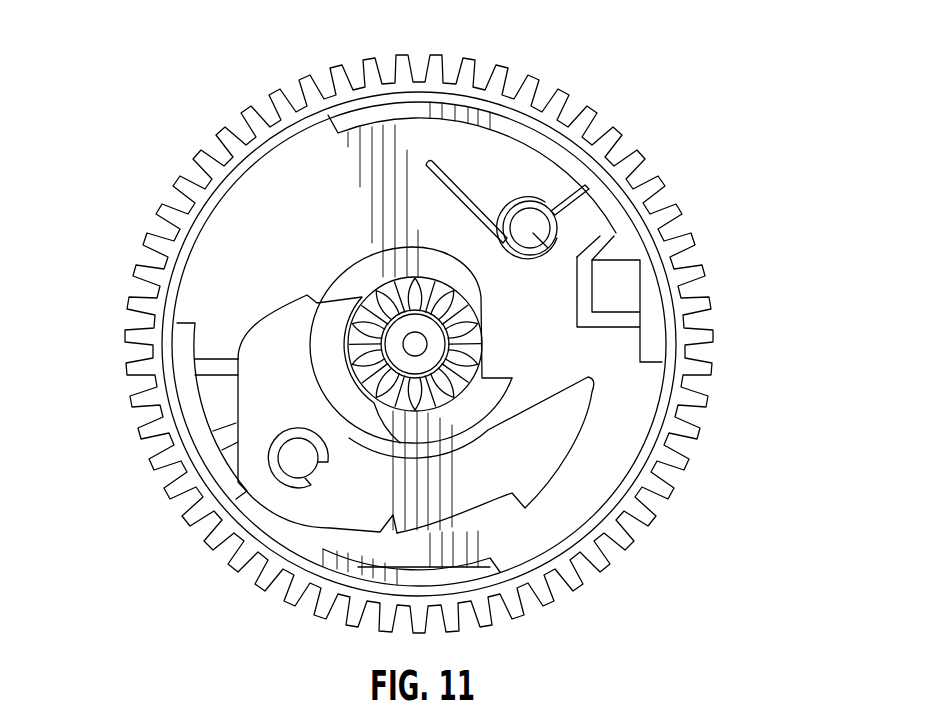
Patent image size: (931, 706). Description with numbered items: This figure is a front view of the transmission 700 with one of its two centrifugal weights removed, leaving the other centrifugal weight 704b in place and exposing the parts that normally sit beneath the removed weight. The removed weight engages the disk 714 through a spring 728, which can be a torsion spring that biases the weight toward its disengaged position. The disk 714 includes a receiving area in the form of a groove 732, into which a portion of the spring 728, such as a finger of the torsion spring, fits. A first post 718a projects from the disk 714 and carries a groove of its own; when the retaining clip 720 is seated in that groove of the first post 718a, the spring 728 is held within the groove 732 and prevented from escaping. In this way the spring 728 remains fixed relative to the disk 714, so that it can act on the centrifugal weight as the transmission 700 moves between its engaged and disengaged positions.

The transmission 700 is at (721, 159).
The disk 714 is at (205, 298).
The centrifugal weight 704b is at (320, 506).
The spring 728 is at (480, 207).
The retaining clip 720 is at (533, 237).
The groove 732 is at (570, 212).
The first post 718a is at (603, 247).